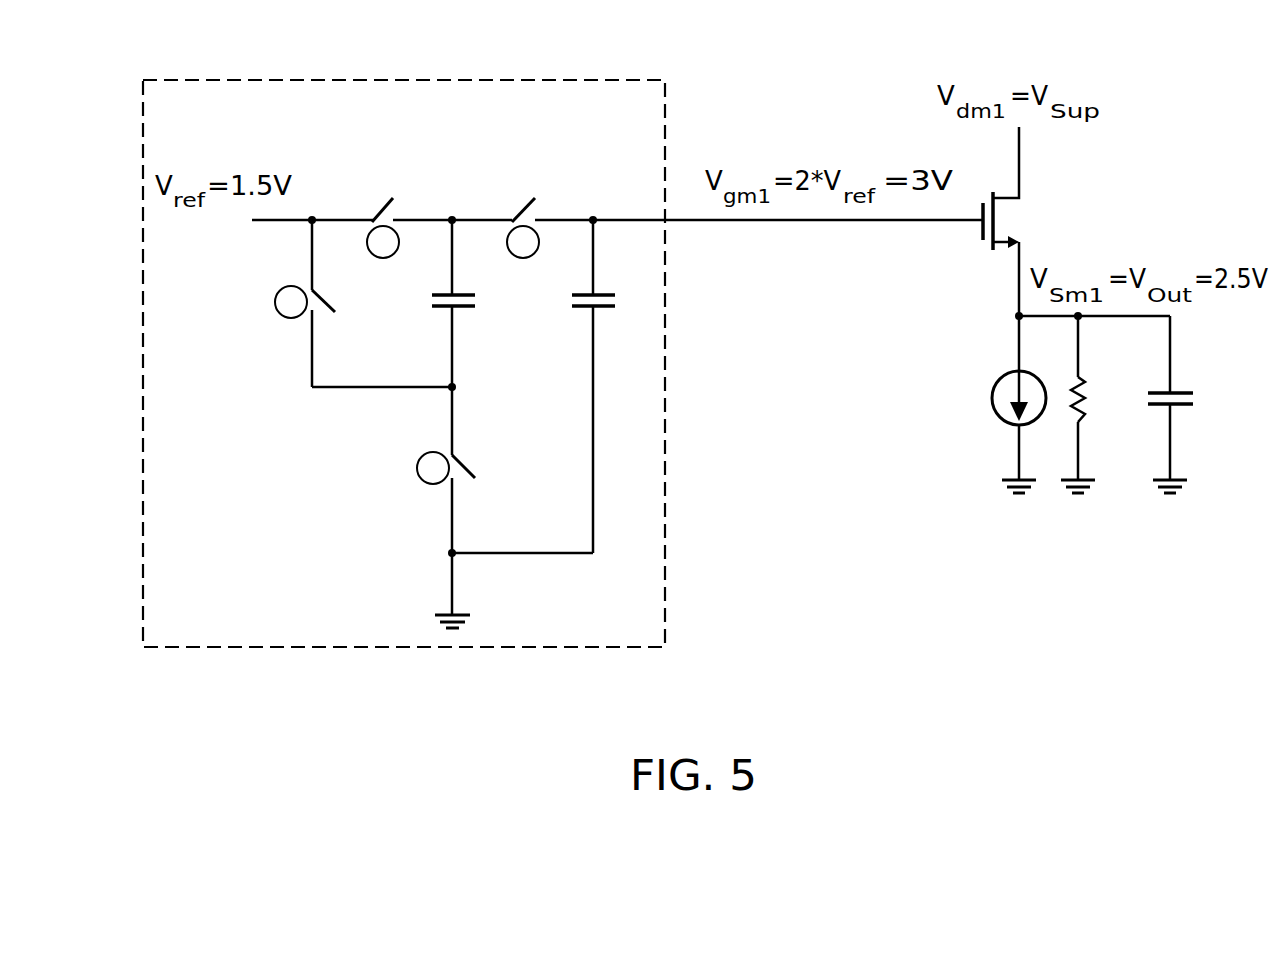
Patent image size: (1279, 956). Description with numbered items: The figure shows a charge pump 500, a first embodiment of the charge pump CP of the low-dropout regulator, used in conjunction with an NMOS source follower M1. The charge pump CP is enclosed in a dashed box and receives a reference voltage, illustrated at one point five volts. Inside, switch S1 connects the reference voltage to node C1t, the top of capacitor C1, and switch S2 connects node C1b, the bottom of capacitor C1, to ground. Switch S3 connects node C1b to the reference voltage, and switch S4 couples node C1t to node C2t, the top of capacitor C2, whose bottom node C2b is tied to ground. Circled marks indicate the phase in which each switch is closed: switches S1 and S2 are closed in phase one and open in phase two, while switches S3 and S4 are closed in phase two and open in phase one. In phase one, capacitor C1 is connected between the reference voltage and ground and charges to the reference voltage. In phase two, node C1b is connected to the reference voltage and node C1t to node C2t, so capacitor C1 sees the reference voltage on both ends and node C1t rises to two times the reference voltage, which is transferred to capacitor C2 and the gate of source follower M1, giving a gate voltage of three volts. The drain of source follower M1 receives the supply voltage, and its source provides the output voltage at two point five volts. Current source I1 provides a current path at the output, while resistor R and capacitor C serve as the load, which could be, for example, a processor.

The charge pump 500 is at (333, 680).
The charge pump CP is at (261, 54).
The switch S1 is at (385, 205).
The switch S2 is at (465, 466).
The switch S3 is at (325, 298).
The switch S4 is at (525, 204).
The capacitor C1 is at (445, 313).
The capacitor C2 is at (586, 313).
The node C1t is at (452, 214).
The node C1b is at (457, 387).
The node C2t is at (593, 214).
The node C2b is at (448, 553).
The NMOS source follower M1 is at (1012, 219).
The current source I1 is at (992, 398).
The resistor R is at (1088, 397).
The capacitor C is at (1196, 398).